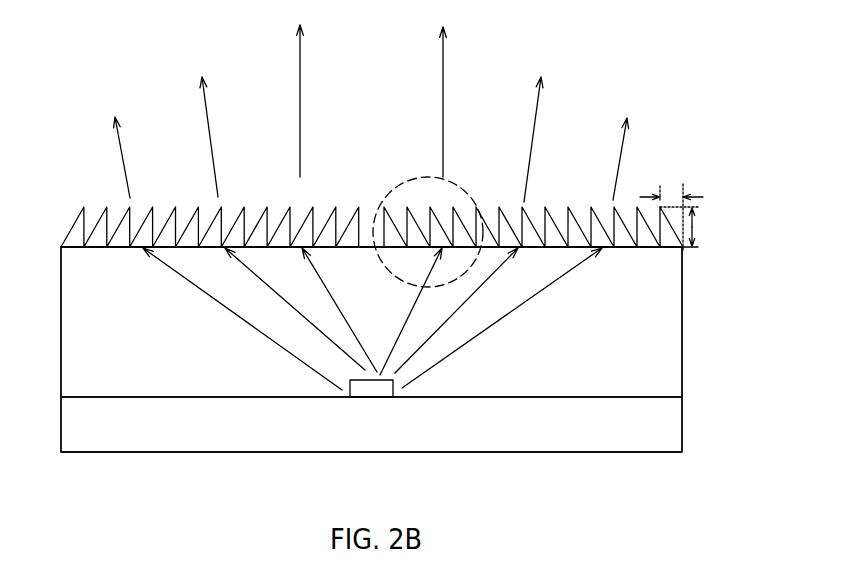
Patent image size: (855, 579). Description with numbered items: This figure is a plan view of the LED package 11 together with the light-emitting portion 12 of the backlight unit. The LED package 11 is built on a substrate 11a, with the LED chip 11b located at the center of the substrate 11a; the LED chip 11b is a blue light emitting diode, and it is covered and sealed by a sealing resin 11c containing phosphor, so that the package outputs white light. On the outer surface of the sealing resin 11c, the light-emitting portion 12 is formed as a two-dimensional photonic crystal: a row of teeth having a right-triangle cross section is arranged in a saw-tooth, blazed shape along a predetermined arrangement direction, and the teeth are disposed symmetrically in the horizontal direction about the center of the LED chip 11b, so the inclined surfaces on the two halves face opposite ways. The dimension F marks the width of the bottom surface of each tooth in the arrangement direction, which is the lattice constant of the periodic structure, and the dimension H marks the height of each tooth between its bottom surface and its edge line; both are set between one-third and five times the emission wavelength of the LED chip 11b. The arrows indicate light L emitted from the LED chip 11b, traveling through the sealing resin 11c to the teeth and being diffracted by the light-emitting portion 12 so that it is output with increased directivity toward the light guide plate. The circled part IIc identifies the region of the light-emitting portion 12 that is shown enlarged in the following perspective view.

The LED package 11 is at (693, 408).
The substrate 11a is at (668, 433).
The LED chip 11b is at (373, 390).
The sealing resin 11c is at (668, 313).
The light-emitting portion 12 is at (648, 162).
The dimension of bottom surface of tooth F is at (675, 196).
The height dimension of tooth H is at (697, 229).
The light L is at (534, 137).
The circled part IIc is at (391, 193).